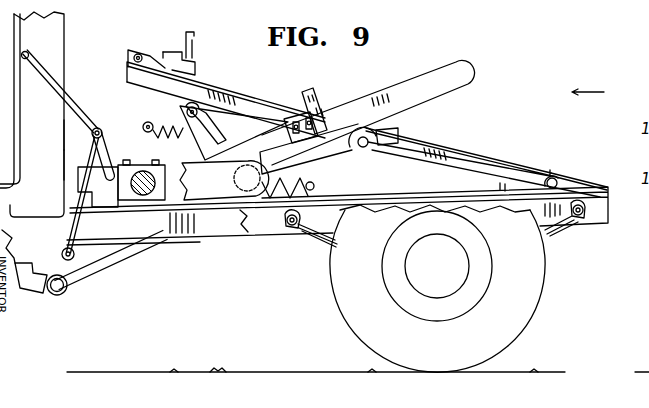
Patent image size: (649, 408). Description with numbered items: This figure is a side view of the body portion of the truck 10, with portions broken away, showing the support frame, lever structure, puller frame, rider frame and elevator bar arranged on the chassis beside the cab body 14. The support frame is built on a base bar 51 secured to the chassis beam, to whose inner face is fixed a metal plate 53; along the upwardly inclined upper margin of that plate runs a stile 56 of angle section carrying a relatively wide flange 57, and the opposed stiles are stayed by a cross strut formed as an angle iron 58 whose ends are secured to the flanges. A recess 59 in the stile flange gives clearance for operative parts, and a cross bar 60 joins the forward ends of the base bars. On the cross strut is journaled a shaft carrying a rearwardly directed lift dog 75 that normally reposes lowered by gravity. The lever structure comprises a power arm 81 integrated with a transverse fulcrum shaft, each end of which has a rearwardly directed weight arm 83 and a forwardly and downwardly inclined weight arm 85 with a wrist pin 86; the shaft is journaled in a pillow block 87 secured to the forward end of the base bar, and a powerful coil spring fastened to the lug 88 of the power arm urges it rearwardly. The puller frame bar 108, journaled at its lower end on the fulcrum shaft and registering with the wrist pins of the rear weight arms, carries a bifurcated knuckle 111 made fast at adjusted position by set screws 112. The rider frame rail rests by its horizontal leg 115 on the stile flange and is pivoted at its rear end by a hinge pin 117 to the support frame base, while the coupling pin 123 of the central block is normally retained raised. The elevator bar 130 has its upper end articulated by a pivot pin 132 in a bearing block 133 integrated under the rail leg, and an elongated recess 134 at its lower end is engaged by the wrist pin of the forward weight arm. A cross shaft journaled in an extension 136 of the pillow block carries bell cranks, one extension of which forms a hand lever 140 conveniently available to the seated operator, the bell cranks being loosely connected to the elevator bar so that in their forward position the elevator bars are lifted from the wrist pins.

The vehicle / apparatus 10 is at (604, 94).
The body panel 14 is at (87, 157).
The base bar 51 is at (334, 196).
The metal plate 53 is at (507, 158).
The stile 56 is at (247, 108).
The flange 57 is at (125, 80).
The angle iron 58 is at (128, 52).
The recess 59 is at (406, 152).
The cross bar 60 is at (73, 193).
The lift dog 75 is at (157, 60).
The power arm 81 is at (174, 119).
The weight arm 83 is at (222, 188).
The weight arm 85 is at (94, 265).
The wrist pin 86 is at (65, 296).
The pillow block 87 is at (162, 200).
The lug 88 is at (143, 115).
The bar 108 is at (356, 97).
The bifurcated knuckle 111 is at (312, 92).
The set screw 112 is at (323, 117).
The horizontal leg 115 is at (470, 144).
The hinge pin 117 is at (567, 176).
The coupling pin 123 is at (197, 44).
The elevator bar 130 is at (323, 162).
The pivot pin 132 is at (367, 146).
The bearing block 133 is at (390, 133).
The elongated recess 134 is at (40, 298).
The extension 136 is at (110, 169).
The hand lever 140 is at (51, 100).